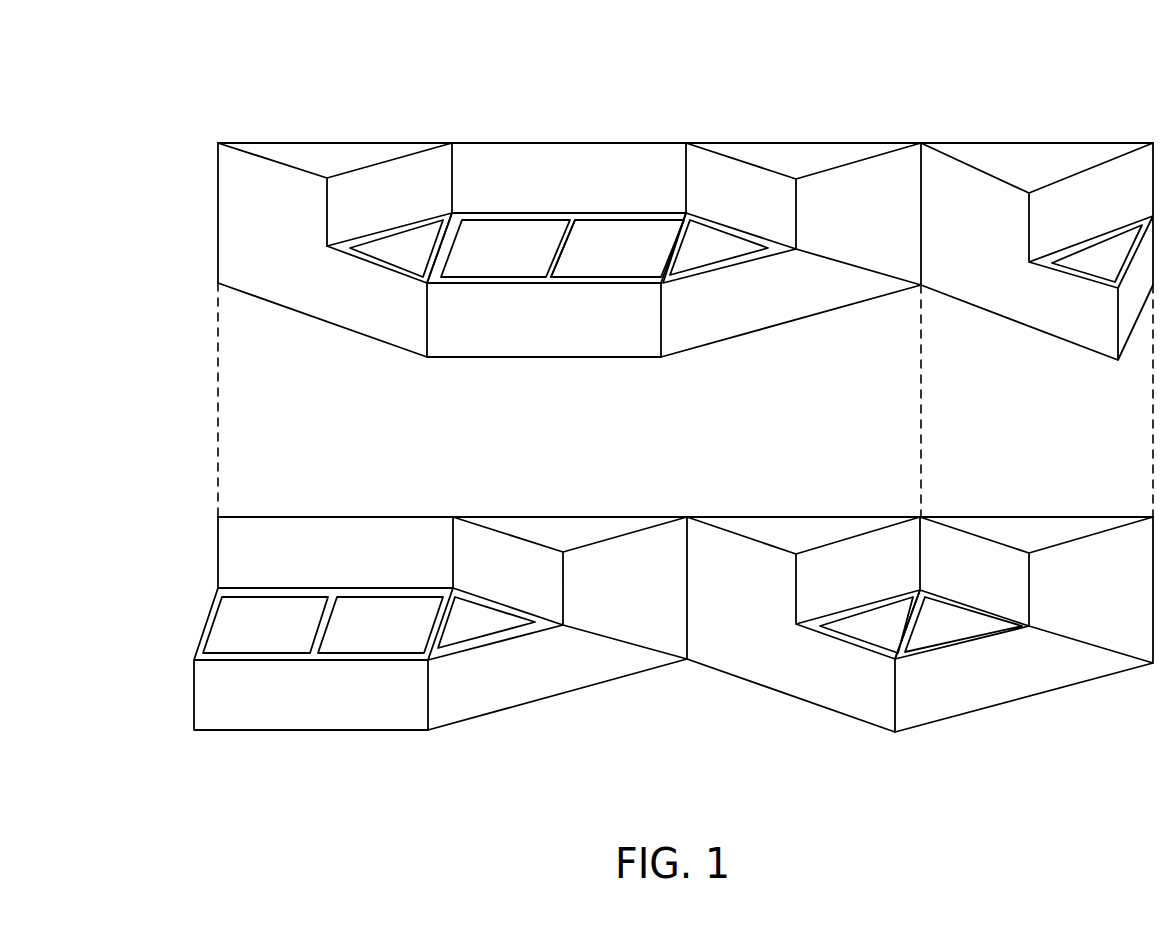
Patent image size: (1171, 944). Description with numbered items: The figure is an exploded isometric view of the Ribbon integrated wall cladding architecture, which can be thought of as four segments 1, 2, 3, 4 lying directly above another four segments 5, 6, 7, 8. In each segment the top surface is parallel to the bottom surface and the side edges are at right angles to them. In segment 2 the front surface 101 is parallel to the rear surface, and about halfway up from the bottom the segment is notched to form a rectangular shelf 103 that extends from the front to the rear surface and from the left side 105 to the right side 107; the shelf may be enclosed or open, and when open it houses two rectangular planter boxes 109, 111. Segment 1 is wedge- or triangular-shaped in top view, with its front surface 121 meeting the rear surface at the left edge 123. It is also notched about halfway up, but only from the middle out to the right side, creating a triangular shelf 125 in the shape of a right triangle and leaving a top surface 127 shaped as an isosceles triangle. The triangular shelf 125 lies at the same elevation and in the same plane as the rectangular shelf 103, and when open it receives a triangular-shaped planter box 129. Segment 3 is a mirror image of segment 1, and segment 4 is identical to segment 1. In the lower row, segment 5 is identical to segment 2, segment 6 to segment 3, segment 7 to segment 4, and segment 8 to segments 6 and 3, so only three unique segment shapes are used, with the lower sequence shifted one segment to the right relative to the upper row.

The segment 1 is at (283, 215).
The segment 2 is at (527, 224).
The segment 3 is at (793, 128).
The segment 4 is at (1053, 128).
The segment 5 is at (335, 507).
The segment 6 is at (557, 507).
The segment 7 is at (795, 507).
The segment 8 is at (1055, 507).
The front surface 101 is at (567, 330).
The rectangular shelf 103 is at (568, 238).
The left side 105 is at (427, 313).
The right side 107 is at (661, 318).
The planter box 109 is at (523, 260).
The planter box 111 is at (638, 260).
The front surface 121 is at (283, 238).
The left edge 123 is at (218, 227).
The triangular shelf 125 is at (410, 250).
The top surface 127 is at (283, 150).
The triangular-shaped planter box 129 is at (378, 262).